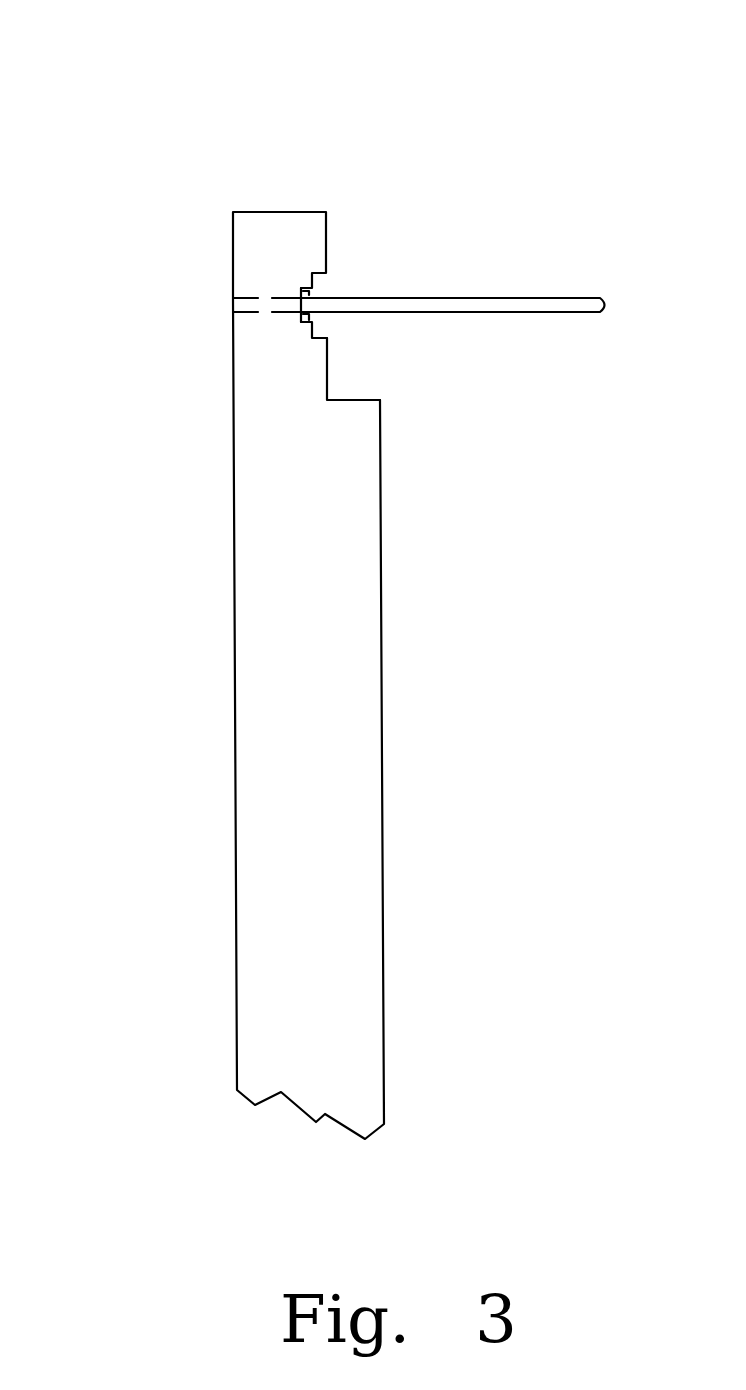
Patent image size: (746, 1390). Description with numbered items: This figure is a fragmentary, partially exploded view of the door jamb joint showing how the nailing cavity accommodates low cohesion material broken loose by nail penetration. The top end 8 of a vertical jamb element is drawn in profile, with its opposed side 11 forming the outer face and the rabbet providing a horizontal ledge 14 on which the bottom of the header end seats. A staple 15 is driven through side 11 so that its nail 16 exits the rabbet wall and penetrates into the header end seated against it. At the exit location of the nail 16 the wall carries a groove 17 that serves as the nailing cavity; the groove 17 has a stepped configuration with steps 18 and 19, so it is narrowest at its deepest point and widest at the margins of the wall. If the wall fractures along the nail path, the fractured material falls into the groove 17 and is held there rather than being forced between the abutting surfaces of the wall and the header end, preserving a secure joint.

The top end of vertical jamb element 8 is at (280, 212).
The opposed side of vertical element 11 is at (236, 859).
The horizontal ledge 14 is at (348, 400).
The staple 15 is at (231, 298).
The nail 16 is at (468, 312).
The groove 17 is at (302, 316).
The step 18 is at (303, 295).
The step 19 is at (302, 318).